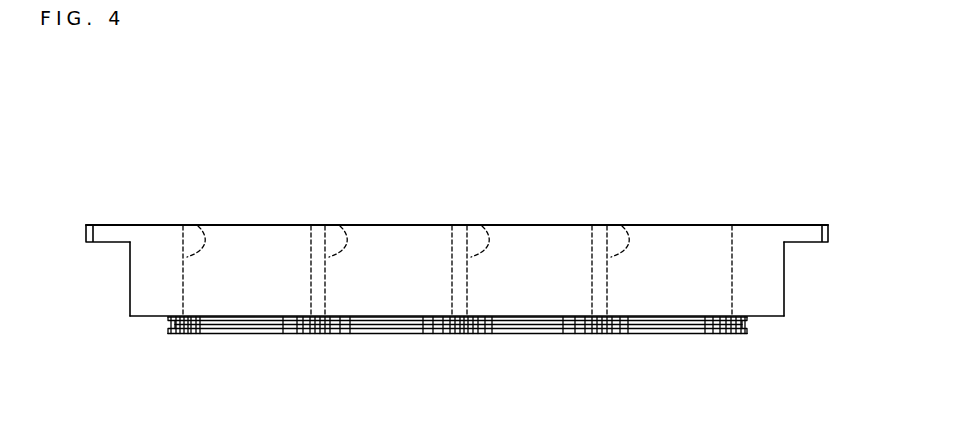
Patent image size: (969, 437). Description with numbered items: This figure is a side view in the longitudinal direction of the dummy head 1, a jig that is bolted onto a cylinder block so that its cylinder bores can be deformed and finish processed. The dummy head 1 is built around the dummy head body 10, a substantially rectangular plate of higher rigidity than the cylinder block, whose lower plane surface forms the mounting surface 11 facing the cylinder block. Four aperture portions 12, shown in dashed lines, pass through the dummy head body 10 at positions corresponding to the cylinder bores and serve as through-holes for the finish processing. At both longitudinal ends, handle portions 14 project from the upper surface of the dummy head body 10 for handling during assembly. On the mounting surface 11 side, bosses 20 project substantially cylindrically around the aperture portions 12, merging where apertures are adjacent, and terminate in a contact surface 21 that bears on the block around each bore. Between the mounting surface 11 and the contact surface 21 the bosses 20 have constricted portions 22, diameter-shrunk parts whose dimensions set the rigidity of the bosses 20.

The dummy head 1 is at (452, 140).
The dummy head body 10 is at (400, 225).
The mounting surface 11 is at (148, 319).
The aperture portions 12 is at (197, 224).
The handle portions 14 is at (108, 244).
The bosses 20 is at (397, 335).
The contact surface 21 is at (662, 336).
The constricted portions 22 is at (746, 325).